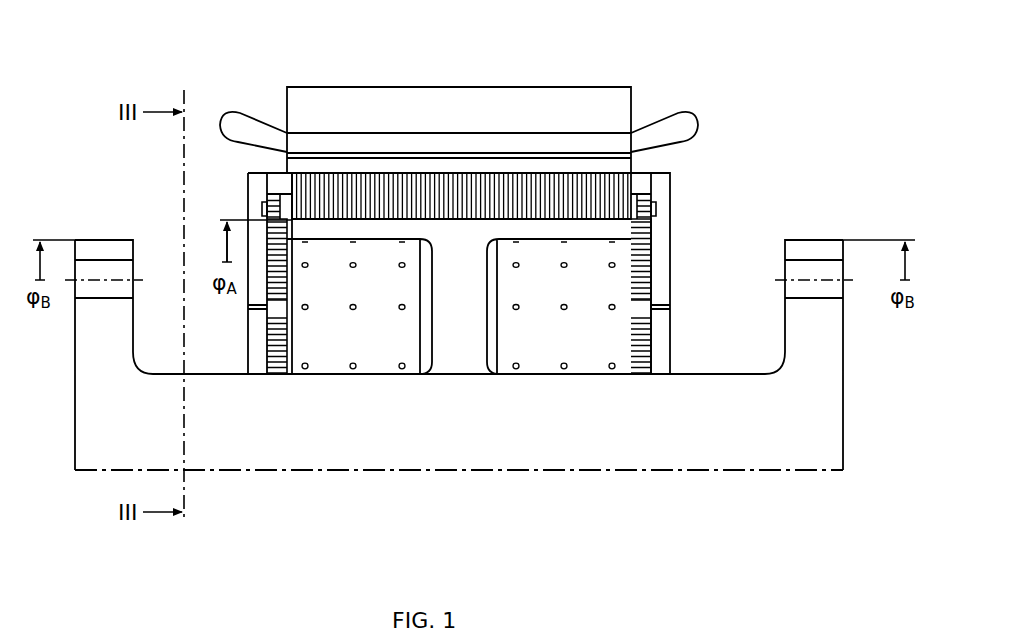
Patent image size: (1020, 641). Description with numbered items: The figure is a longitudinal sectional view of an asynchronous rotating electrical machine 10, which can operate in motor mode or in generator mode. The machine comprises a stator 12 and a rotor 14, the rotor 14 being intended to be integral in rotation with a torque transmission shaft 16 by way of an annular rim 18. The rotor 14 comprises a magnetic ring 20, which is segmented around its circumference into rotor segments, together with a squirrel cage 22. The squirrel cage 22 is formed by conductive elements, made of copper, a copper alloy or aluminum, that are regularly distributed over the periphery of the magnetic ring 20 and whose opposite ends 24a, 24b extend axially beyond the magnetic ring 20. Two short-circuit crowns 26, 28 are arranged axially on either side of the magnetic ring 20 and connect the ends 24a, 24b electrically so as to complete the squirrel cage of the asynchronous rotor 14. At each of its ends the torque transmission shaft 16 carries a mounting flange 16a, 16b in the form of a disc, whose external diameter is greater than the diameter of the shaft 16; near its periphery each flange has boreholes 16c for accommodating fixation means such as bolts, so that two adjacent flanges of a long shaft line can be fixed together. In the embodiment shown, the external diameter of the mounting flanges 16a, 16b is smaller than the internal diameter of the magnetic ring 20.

The asynchronous rotating electrical machine 10 is at (592, 50).
The stator 12 is at (611, 82).
The rotor 14 is at (648, 166).
The torque transmission shaft 16 is at (459, 379).
The mounting flange 16a is at (86, 412).
The mounting flange 16b is at (826, 356).
The boreholes 16c is at (155, 252).
The annular rim 18 is at (460, 328).
The magnetic ring 20 is at (486, 186).
The squirrel cage 22 is at (676, 195).
The end of conductive element 24a is at (278, 187).
The end of conductive element 24b is at (644, 184).
The short-circuit crown 26 is at (254, 300).
The short-circuit crown 28 is at (663, 268).